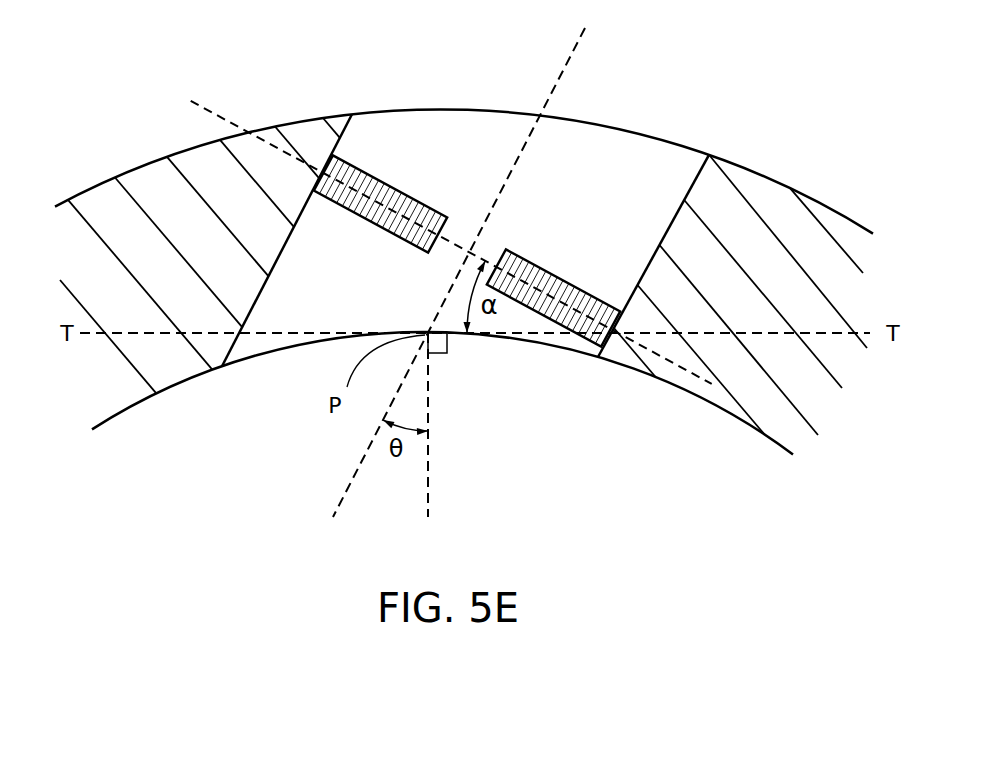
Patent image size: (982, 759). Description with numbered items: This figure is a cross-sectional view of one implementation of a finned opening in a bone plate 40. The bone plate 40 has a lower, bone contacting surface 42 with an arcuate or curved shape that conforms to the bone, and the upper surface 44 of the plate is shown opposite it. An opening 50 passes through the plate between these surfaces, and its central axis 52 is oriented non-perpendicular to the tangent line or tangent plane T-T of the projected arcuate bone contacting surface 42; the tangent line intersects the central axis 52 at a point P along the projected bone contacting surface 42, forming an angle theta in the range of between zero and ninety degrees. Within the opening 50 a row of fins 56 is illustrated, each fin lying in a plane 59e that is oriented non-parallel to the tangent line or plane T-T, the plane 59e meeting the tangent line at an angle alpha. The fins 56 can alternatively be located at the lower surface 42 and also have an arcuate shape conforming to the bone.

The bone plate 40 is at (743, 168).
The bone contacting surface 42 is at (627, 370).
The outer surface of rotor core 44 is at (148, 162).
The opening 50 is at (600, 147).
The central axis 52 is at (560, 72).
The fins 56 is at (373, 188).
The plane 59e is at (222, 117).